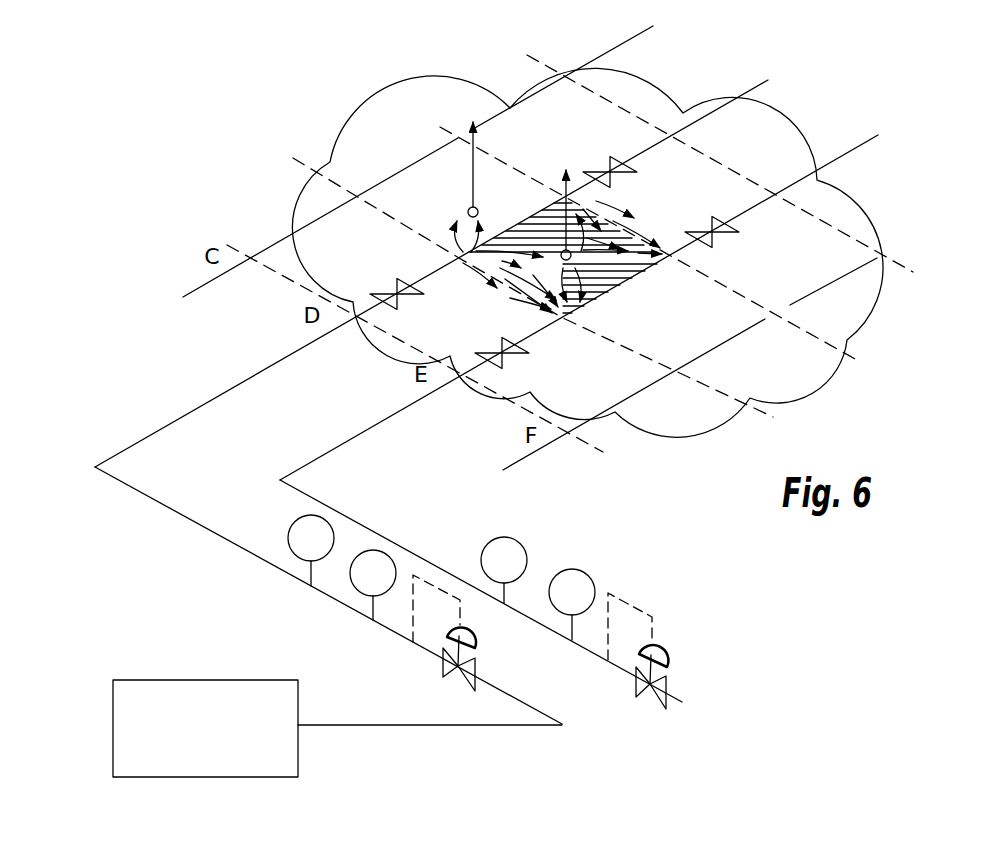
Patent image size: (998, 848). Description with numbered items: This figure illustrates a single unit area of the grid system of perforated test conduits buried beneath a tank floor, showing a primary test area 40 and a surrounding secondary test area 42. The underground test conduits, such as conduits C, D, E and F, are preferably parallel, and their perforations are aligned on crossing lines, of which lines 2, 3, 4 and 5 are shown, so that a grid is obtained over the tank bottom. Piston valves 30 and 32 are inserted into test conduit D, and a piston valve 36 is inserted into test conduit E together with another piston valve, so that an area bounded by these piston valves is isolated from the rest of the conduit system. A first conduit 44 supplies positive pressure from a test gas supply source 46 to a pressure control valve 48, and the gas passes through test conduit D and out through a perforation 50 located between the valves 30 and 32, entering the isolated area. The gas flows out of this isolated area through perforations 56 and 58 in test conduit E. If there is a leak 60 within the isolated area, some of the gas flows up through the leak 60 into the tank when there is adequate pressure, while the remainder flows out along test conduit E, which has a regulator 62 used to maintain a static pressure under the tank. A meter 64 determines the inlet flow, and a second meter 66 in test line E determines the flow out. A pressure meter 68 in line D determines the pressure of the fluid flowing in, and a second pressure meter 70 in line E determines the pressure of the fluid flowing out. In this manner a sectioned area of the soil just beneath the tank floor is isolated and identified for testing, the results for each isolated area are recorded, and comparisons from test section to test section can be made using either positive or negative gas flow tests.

The perforation alignment line 2 is at (415, 348).
The perforation alignment line 3 is at (533, 287).
The perforation alignment line 4 is at (648, 241).
The perforation alignment line 5 is at (720, 163).
The piston valve 30 is at (406, 294).
The piston valve 32 is at (588, 174).
The piston valve 36 is at (717, 234).
The primary test area 40 is at (520, 213).
The secondary test area 42 is at (653, 84).
The first conduit 44 is at (237, 548).
The test gas supply source 46 is at (190, 679).
The pressure control valve 48 is at (443, 660).
The perforation 50 is at (457, 249).
The perforation 56 is at (559, 318).
The perforation 58 is at (670, 262).
The leak 60 is at (577, 250).
The regulator 62 is at (660, 652).
The meter 64 is at (297, 519).
The second meter 66 is at (520, 537).
The pressure meter 68 is at (375, 549).
The second pressure meter 70 is at (588, 576).